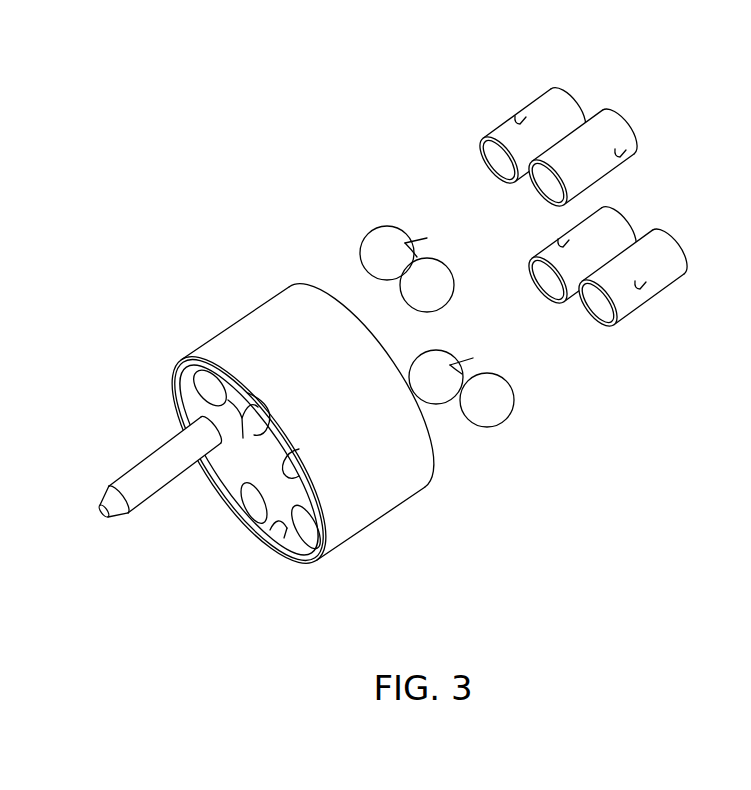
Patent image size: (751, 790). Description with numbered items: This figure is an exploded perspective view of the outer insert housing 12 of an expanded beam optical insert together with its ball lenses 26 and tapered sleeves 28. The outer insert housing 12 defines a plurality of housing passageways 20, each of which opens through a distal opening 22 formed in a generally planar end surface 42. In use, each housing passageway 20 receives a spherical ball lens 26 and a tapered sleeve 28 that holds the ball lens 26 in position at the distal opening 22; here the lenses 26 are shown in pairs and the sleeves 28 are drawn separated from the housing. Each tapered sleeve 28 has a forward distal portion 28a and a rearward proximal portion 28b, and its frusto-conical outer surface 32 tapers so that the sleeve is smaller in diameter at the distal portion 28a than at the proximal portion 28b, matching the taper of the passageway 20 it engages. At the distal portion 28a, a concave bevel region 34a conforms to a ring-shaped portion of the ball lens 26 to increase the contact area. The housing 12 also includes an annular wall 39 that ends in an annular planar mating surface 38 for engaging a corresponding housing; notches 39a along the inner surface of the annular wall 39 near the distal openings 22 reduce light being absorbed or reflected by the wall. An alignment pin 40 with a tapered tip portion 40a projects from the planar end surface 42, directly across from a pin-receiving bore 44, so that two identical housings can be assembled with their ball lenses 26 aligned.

The outer insert housing 12 is at (255, 337).
The housing passageway 20 is at (213, 387).
The distal opening 22 is at (242, 568).
The spherical ball lens 26 is at (428, 270).
The tapered sleeve 28 is at (563, 110).
The distal portion 28a is at (537, 192).
The proximal portion 28b is at (549, 86).
The frusto-conical outer surface 32 is at (518, 115).
The bevel region 34a is at (490, 165).
The annular planar mating surface 38 is at (176, 373).
The annular wall 39 is at (222, 507).
The notch 39a is at (256, 522).
The alignment pin 40 is at (140, 470).
The tapered tip portion 40a is at (94, 487).
The planar end surface 42 is at (234, 472).
The pin-receiving bore 44 is at (284, 476).